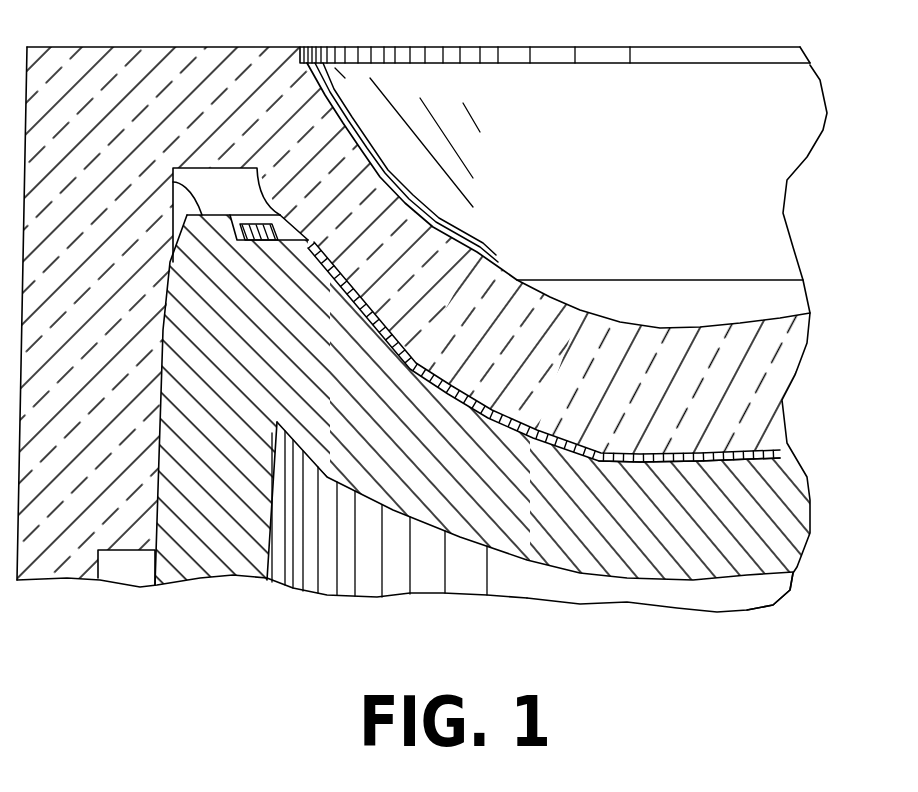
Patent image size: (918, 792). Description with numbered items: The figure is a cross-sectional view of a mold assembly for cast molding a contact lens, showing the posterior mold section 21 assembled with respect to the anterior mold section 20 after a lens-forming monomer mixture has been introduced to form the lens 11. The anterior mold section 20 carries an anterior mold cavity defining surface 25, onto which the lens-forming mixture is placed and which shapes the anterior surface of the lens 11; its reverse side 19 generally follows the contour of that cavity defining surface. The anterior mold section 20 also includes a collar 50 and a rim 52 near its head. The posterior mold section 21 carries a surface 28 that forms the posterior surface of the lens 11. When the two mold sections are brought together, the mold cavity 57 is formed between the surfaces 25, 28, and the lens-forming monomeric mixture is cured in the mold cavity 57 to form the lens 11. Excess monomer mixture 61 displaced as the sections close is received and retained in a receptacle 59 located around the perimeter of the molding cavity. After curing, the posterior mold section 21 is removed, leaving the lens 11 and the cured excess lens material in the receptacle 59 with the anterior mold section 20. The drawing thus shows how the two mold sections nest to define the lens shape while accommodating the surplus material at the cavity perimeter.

The lens 11 is at (780, 453).
The reverse side 19 is at (748, 577).
The anterior mold section 20 is at (523, 557).
The posterior mold section 21 is at (497, 268).
The anterior mold cavity defining surface 25 is at (633, 460).
The posterior mold cavity defining surface 28 is at (496, 393).
The collar 50 is at (173, 177).
The rim 52 is at (300, 250).
The mold cavity 57 is at (375, 323).
The receptacle 59 is at (237, 220).
The excess monomer mixture 61 is at (283, 222).